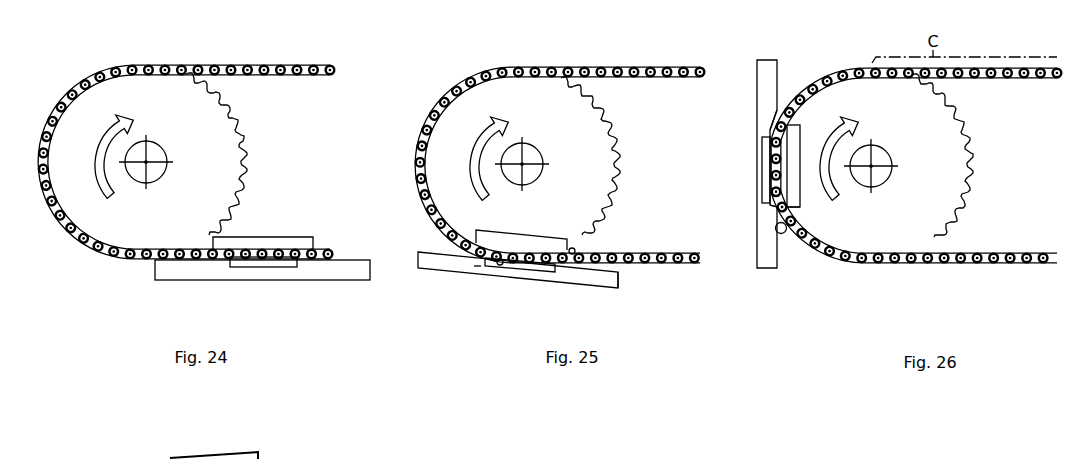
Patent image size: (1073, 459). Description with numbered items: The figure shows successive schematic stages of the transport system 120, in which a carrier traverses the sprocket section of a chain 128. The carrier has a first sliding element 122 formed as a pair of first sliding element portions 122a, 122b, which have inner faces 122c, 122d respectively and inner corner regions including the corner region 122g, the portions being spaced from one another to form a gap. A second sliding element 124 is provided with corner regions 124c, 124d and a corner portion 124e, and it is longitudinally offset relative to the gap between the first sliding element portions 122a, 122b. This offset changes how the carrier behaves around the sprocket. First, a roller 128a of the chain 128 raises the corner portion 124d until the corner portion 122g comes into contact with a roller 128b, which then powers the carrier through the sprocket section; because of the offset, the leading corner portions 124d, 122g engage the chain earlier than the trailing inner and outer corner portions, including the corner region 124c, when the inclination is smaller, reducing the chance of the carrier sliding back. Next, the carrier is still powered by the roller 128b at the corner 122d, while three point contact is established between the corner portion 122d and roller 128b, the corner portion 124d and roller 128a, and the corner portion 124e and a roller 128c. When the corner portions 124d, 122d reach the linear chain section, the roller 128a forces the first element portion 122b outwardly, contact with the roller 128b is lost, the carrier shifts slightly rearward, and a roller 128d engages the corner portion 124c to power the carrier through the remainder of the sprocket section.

In FIG. 24, the transport system 120 is at (187, 281).
In FIG. 24, the first sliding element 122 is at (300, 268).
In FIG. 24, the second sliding element 124 is at (272, 238).
In FIG. 24, the chain 128 is at (275, 78).
In FIG. 25, the first sliding element portion 122a is at (428, 248).
In FIG. 25, the first sliding element portion 122b is at (625, 282).
In FIG. 26, the first sliding element portion 122b is at (760, 110).
In FIG. 25, the inner face 122c is at (558, 272).
In FIG. 26, the inner face 122d is at (768, 122).
In FIG. 25, the inner corner region 122g is at (477, 268).
In FIG. 26, the corner region 124c is at (795, 205).
In FIG. 25, the corner region 124d is at (490, 235).
In FIG. 26, the corner region 124d is at (795, 122).
In FIG. 25, the corner portion 124e is at (575, 248).
In FIG. 25, the roller 128a is at (478, 258).
In FIG. 26, the roller 128a is at (800, 131).
In FIG. 25, the roller 128b is at (500, 265).
In FIG. 26, the roller 128b is at (760, 142).
In FIG. 26, the roller 128c is at (768, 212).
In FIG. 26, the roller 128d is at (786, 233).